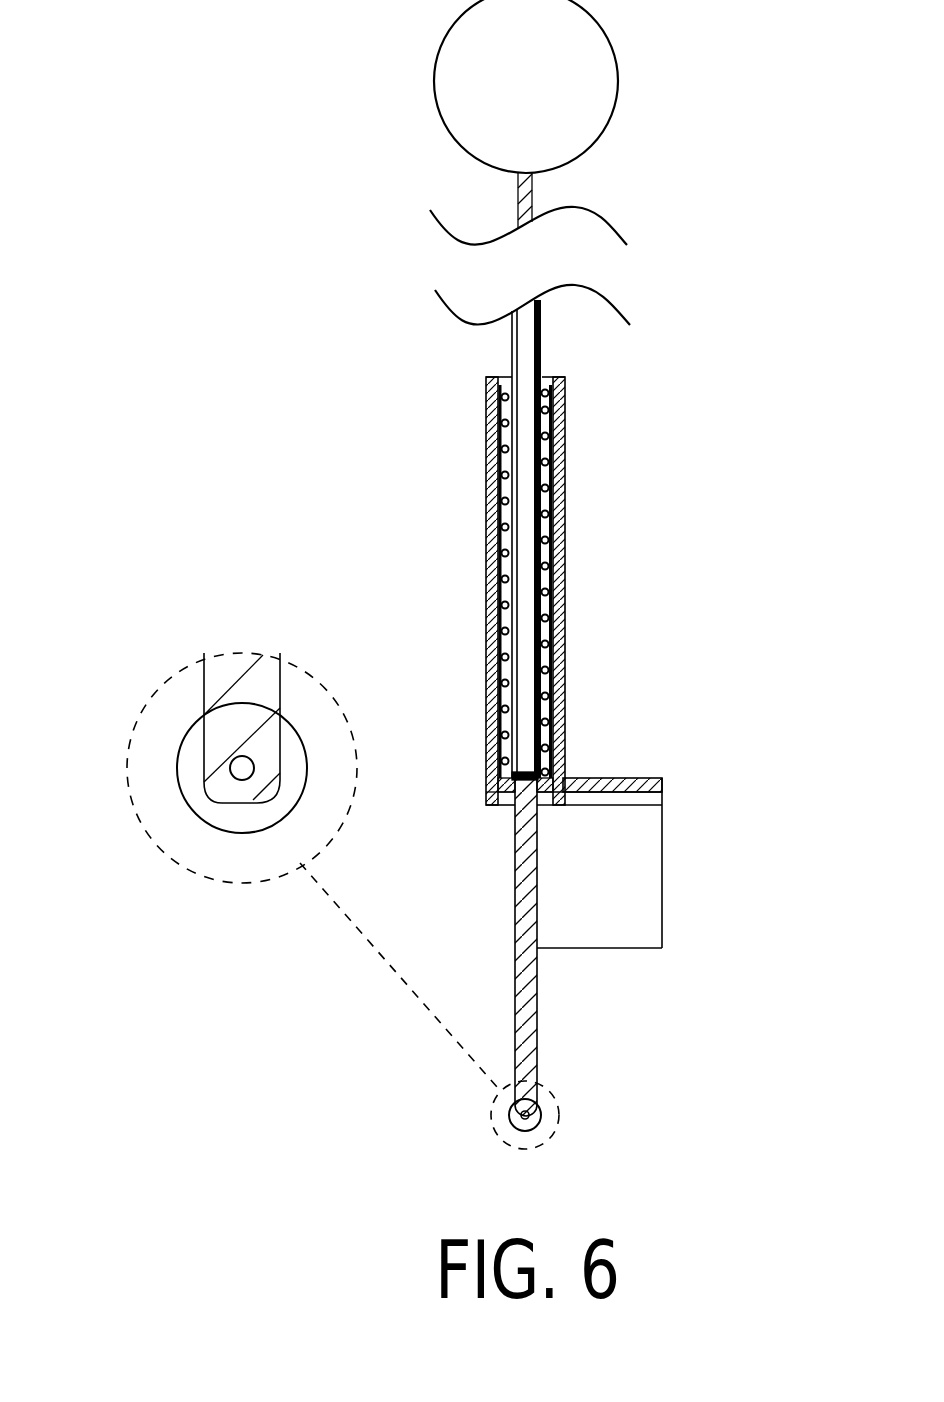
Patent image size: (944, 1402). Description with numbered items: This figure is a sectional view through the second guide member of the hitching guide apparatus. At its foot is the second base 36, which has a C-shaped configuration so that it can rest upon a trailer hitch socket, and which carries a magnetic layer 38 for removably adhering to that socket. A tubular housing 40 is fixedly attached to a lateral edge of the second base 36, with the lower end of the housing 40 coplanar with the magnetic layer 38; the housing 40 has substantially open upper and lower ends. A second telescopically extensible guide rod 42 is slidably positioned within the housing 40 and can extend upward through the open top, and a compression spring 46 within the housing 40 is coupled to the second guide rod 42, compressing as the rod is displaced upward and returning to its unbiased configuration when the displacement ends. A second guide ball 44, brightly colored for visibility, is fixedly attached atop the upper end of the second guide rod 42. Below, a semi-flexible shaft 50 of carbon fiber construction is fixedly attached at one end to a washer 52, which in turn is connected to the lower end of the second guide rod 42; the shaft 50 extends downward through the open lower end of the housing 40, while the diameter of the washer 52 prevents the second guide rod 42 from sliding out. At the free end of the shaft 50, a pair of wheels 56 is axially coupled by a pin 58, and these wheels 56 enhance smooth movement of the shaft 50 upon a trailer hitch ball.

The second base 36 is at (656, 778).
The magnetic layer 38 is at (663, 884).
The tubular housing 40 is at (565, 492).
The second telescopically extensible guide rod 42 is at (542, 331).
The second guide ball 44 is at (433, 63).
The compression spring 46 is at (550, 583).
The semi-flexible shaft 50 is at (514, 868).
The washer 52 is at (527, 776).
The wheels 56 is at (225, 832).
The pin 58 is at (231, 774).